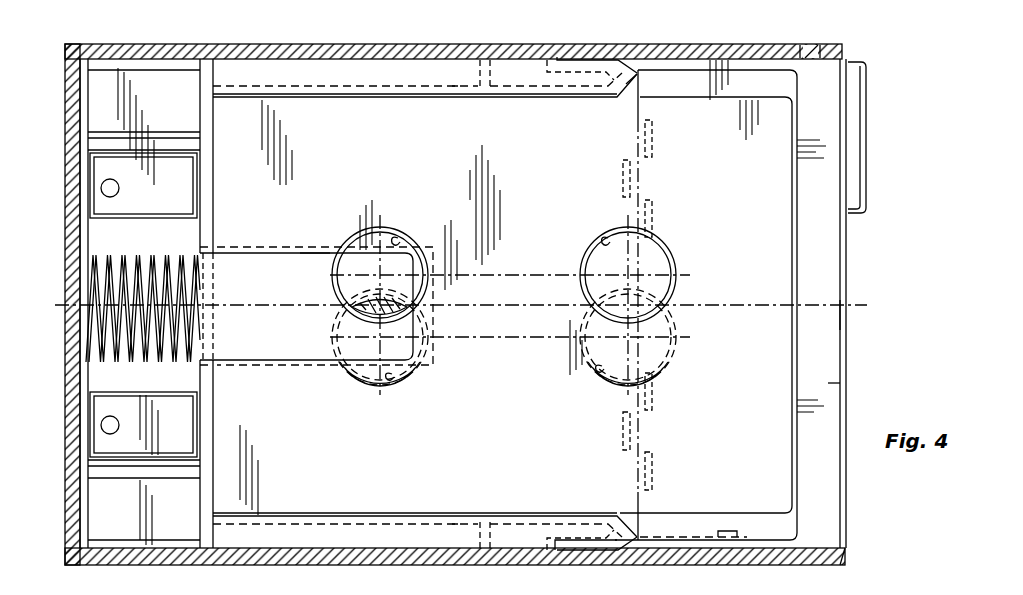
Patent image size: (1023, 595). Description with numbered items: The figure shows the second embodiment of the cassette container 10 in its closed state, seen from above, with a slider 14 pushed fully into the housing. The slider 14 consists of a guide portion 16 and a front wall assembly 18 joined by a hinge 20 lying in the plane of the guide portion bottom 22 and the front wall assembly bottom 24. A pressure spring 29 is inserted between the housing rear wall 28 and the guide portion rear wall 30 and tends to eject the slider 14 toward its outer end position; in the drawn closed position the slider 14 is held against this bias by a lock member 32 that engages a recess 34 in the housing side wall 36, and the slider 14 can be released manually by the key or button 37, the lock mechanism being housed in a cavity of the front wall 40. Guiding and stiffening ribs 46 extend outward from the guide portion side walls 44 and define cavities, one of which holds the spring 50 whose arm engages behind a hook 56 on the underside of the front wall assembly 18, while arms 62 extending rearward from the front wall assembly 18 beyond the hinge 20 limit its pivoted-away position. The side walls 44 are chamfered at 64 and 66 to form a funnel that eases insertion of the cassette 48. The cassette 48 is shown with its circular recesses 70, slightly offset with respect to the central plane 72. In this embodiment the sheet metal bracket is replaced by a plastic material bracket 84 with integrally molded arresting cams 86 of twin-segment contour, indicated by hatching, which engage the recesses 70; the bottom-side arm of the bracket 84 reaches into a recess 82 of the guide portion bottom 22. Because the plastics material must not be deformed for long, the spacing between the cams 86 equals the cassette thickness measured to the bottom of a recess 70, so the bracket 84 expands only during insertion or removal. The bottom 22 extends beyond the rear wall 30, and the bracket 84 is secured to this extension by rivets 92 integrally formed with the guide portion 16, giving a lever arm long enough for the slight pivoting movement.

The housing 10 is at (716, 43).
The slider 14 is at (850, 246).
The guide portion 16 is at (200, 95).
The front wall assembly 18 is at (850, 326).
The hinge 20 is at (646, 190).
The bottom of guide portion 22 is at (96, 152).
The front wall assembly bottom 24 is at (656, 78).
The housing rear wall 28 is at (74, 112).
The pressure spring 29 is at (93, 254).
The guide portion rear wall 30 is at (207, 201).
The lock member 32 is at (818, 43).
The recess 34 is at (810, 43).
The housing side wall 36 is at (596, 45).
The key or button 37 is at (866, 172).
The front wall 40 is at (836, 384).
The guide portion side walls 44 is at (405, 92).
The guiding and stiffening ribs 46 is at (326, 84).
The cassette 48 is at (683, 104).
The spring 50 is at (669, 536).
The hook 56 is at (723, 531).
The arms 62 is at (574, 66).
The chamfer 64 is at (454, 86).
The chamfer 66 is at (633, 81).
The circular recesses 70 is at (398, 240).
The central plane 72 is at (497, 312).
The recess 82 is at (283, 397).
The plastic material bracket 84 is at (302, 248).
The arresting cams 86 is at (384, 316).
The rivets 92 is at (101, 188).